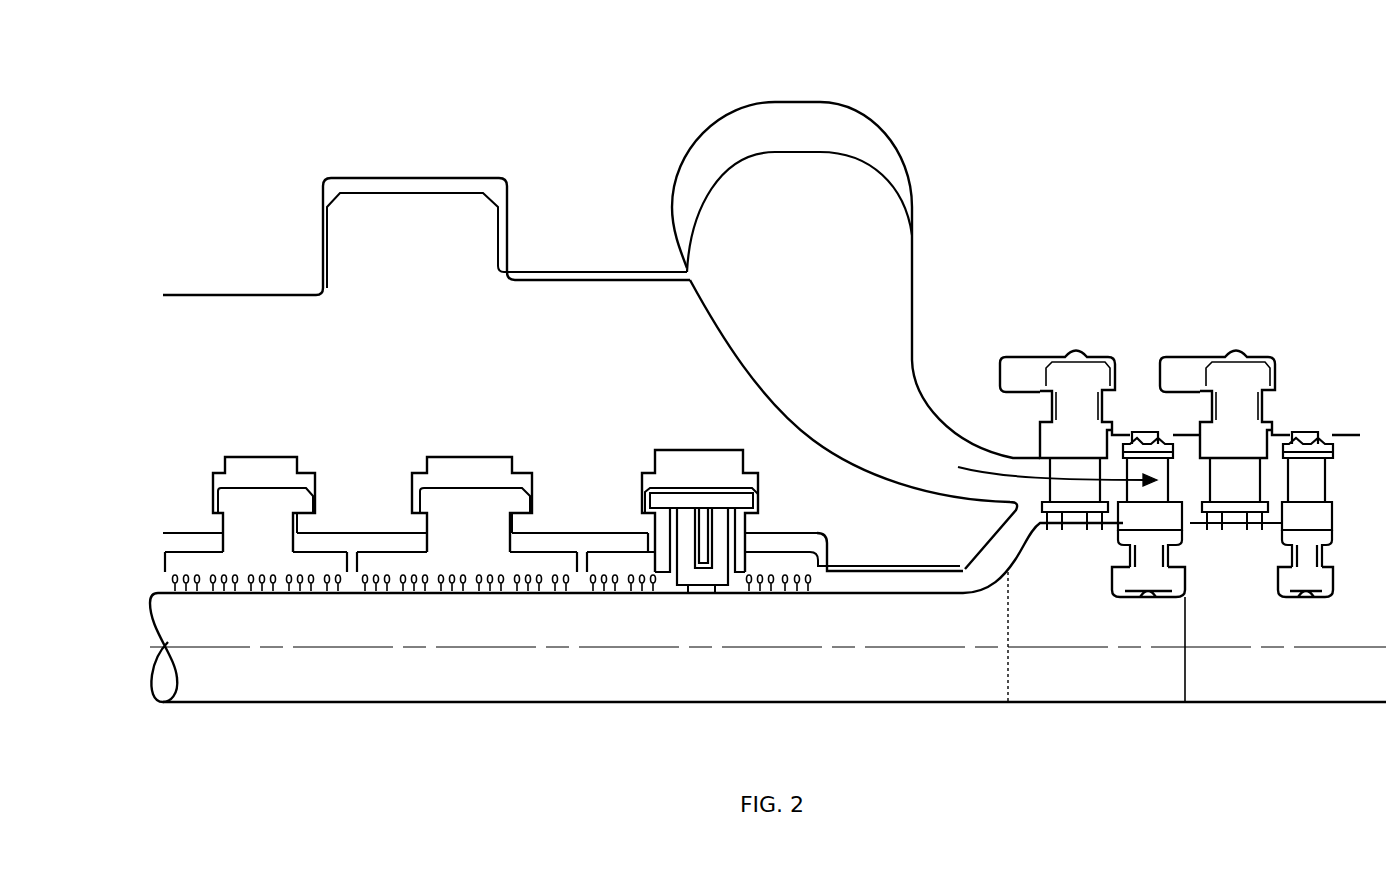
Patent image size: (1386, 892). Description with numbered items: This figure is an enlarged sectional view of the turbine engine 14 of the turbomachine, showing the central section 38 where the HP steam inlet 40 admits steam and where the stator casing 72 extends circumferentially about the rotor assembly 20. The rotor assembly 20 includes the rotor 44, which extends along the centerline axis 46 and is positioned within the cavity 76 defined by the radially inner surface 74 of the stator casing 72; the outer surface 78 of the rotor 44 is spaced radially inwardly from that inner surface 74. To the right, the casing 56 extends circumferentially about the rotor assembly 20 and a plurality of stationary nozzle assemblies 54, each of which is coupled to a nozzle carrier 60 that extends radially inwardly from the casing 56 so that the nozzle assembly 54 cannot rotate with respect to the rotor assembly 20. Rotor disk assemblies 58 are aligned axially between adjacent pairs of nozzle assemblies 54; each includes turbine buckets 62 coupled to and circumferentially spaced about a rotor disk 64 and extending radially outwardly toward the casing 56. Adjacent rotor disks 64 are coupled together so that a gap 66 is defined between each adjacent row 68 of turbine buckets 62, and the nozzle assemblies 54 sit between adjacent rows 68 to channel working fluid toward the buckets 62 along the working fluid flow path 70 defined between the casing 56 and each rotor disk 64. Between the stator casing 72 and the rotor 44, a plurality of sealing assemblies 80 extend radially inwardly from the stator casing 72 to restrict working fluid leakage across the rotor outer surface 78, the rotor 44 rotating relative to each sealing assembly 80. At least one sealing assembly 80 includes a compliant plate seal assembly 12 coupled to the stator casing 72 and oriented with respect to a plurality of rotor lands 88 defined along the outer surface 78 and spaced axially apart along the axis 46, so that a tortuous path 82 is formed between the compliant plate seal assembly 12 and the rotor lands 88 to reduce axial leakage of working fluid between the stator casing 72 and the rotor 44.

The compliant plate seal assembly 12 is at (745, 543).
The turbine engine 14 is at (1025, 126).
The rotor assembly 20 is at (912, 589).
The central section 38 is at (407, 137).
The HP steam inlet 40 is at (788, 193).
The rotor 44 is at (617, 634).
The centerline axis 46 is at (160, 648).
The stationary nozzle assembly 54 is at (1085, 375).
The casing 56 is at (1054, 244).
The rotor disk assembly 58 is at (1095, 687).
The nozzle carrier 60 is at (920, 382).
The turbine bucket 62 is at (1133, 577).
The rotor disk 64 is at (1057, 582).
The gap 66 is at (1175, 492).
The row of turbine buckets 68 is at (1287, 423).
The working fluid flow path 70 is at (990, 460).
The stator casing 72 is at (419, 362).
The radially inner surface 74 is at (597, 542).
The cavity 76 is at (572, 539).
The outer surface 78 is at (847, 589).
The sealing assembly 80 is at (323, 518).
The tortuous path 82 is at (822, 577).
The rotor land 88 is at (698, 595).